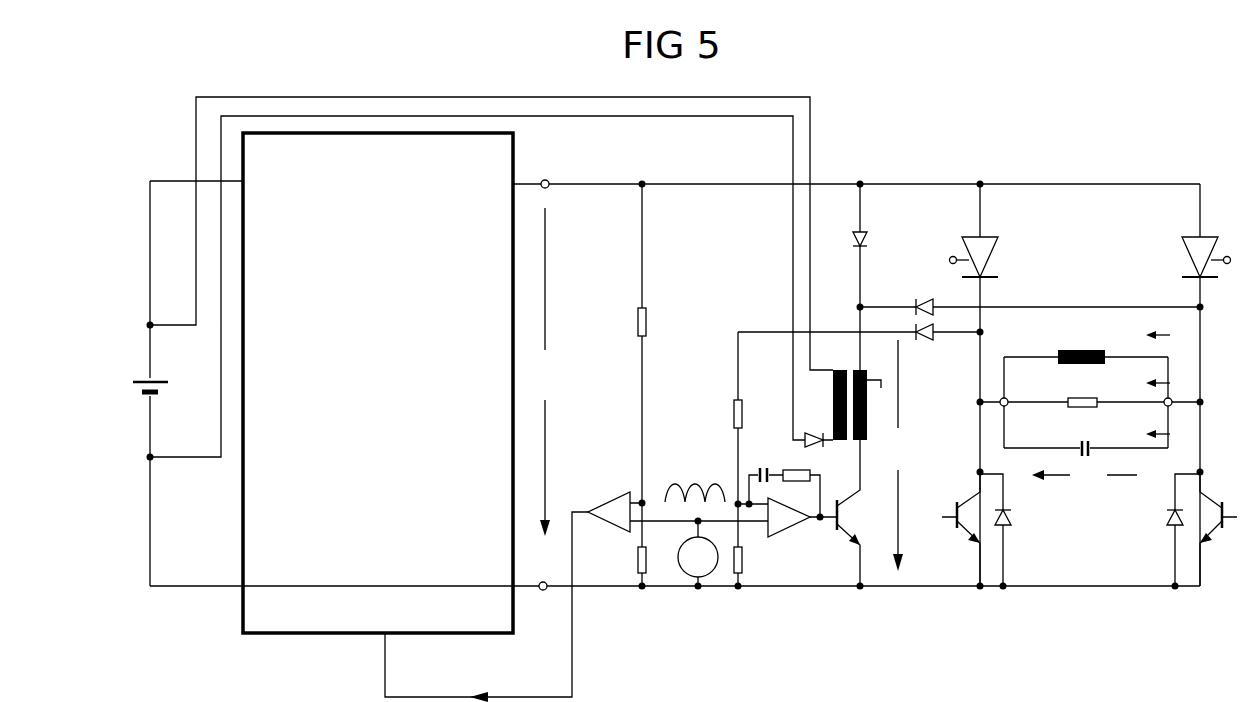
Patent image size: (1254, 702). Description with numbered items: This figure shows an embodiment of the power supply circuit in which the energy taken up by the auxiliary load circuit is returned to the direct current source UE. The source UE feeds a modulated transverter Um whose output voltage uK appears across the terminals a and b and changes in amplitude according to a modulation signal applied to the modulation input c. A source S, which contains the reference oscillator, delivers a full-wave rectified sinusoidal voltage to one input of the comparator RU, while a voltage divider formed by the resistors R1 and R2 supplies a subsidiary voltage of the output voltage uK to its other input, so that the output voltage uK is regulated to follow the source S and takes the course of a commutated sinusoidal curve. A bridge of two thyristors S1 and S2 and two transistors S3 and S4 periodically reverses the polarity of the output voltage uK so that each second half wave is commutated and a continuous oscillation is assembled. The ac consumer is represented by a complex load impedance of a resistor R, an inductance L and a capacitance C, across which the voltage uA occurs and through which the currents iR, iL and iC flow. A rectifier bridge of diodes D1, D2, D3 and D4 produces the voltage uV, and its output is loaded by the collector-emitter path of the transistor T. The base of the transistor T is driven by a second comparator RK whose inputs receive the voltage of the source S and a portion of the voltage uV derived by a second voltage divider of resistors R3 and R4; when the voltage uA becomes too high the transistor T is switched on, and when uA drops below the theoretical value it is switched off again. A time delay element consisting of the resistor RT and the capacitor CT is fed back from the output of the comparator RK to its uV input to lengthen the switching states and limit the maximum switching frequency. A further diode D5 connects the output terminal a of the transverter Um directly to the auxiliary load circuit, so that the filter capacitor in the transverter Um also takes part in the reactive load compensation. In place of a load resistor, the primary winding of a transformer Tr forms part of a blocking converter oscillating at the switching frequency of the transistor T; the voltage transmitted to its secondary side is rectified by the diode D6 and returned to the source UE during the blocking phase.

The transverter Um is at (378, 383).
The direct current source UE is at (167, 383).
The output terminal a is at (856, 170).
The output terminal b is at (675, 572).
The modulation input c is at (486, 607).
The output voltage uK is at (542, 372).
The resistor R1 is at (658, 365).
The resistor R2 is at (628, 566).
The resistor R3 is at (723, 439).
The resistor R4 is at (755, 566).
The comparator RU is at (617, 495).
The second comparator RK is at (790, 537).
The source S is at (698, 553).
The capacitor CT is at (763, 468).
The resistor RT is at (798, 475).
The diode D6 is at (817, 422).
The transformer Tr is at (860, 405).
The transistor T is at (855, 513).
The diode D5 is at (875, 277).
The diode D1 is at (859, 347).
The diode D2 is at (1030, 291).
The thyristor S1 is at (989, 385).
The thyristor S2 is at (1191, 385).
The transistor S3 is at (961, 529).
The transistor S4 is at (1218, 529).
The diode D3 is at (1011, 530).
The diode D4 is at (1169, 530).
The inductance L is at (1086, 383).
The resistor R is at (1090, 388).
The capacitance C is at (1086, 435).
The inductor current iL is at (1147, 334).
The resistor current iR is at (1147, 380).
The capacitor current iC is at (1147, 428).
The load voltage uA is at (1084, 478).
The rectifier bridge output voltage uV is at (899, 455).